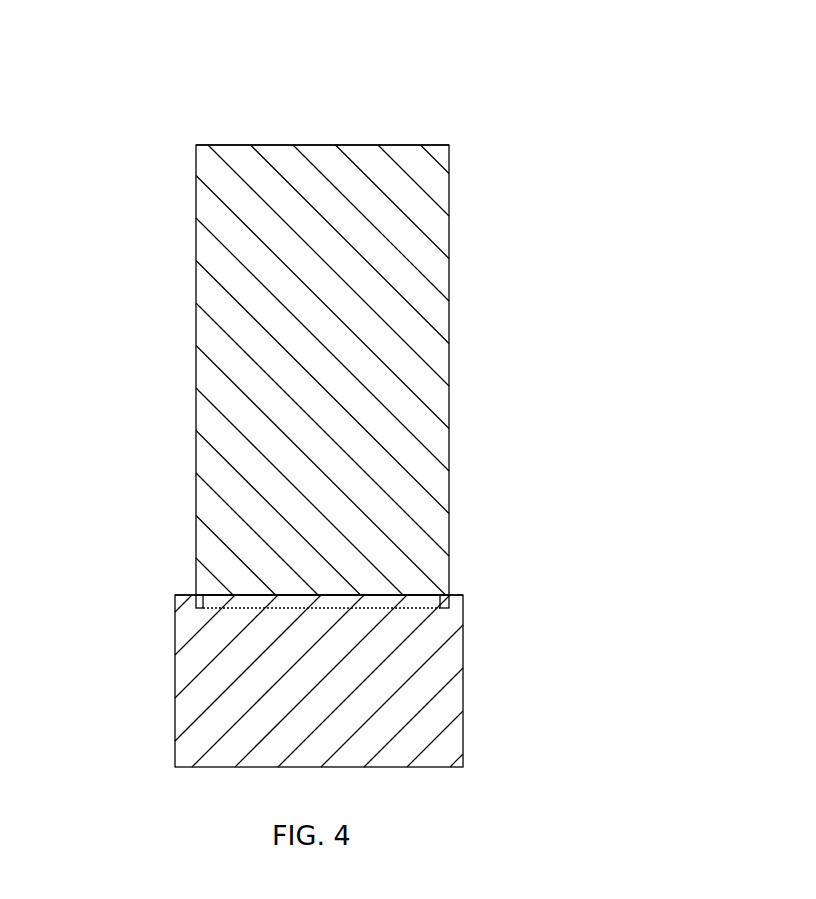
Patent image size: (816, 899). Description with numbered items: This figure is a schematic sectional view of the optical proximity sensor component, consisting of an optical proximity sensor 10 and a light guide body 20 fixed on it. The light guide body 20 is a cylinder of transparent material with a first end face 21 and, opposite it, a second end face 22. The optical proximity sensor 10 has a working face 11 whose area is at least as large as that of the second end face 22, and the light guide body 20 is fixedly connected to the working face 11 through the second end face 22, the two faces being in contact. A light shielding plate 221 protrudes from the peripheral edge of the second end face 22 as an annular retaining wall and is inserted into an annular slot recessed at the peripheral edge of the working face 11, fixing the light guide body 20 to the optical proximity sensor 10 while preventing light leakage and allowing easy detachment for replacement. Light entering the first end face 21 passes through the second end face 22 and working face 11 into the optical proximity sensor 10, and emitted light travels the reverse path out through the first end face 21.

The optical proximity sensor 10 is at (420, 702).
The working face 11 is at (188, 593).
The light guide body 20 is at (385, 408).
The first end face 21 is at (342, 145).
The second end face 22 is at (460, 595).
The light shielding plate 221 is at (193, 613).